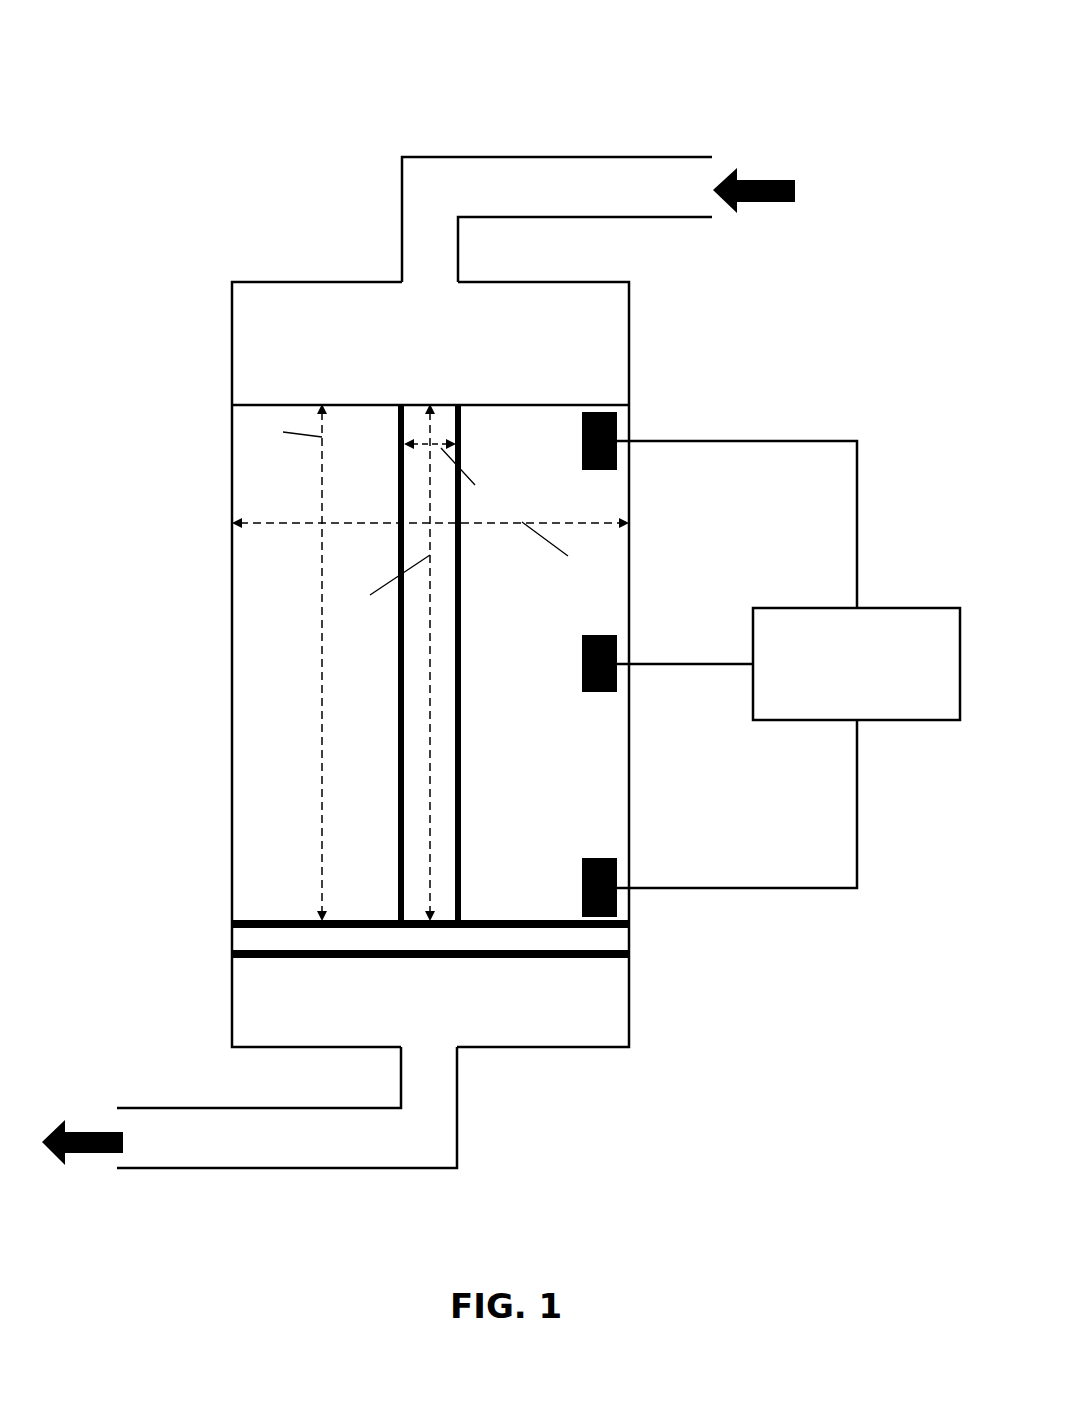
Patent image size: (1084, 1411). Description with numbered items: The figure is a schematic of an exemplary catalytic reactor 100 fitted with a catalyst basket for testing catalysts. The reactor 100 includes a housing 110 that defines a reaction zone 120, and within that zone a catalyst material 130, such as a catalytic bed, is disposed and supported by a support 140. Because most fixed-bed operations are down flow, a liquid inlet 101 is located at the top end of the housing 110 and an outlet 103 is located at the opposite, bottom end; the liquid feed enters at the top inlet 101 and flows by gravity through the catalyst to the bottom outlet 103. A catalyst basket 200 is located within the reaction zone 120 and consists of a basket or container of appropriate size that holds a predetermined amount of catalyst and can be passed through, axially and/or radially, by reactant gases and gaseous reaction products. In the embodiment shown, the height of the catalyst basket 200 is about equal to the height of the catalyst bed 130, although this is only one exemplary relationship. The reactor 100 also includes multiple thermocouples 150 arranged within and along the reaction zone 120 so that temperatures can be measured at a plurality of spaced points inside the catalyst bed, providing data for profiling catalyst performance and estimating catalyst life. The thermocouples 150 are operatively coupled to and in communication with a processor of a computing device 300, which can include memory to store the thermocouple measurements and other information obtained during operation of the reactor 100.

The catalytic reactor 100 is at (272, 106).
The inlet 101 is at (635, 177).
The outlet 103 is at (196, 1157).
The housing 110 is at (201, 583).
The reaction zone 120 is at (315, 800).
The catalyst material 130 is at (295, 512).
The support 140 is at (247, 947).
The thermocouples 150 is at (617, 432).
The catalyst basket 200 is at (398, 745).
The computing device 300 is at (856, 664).